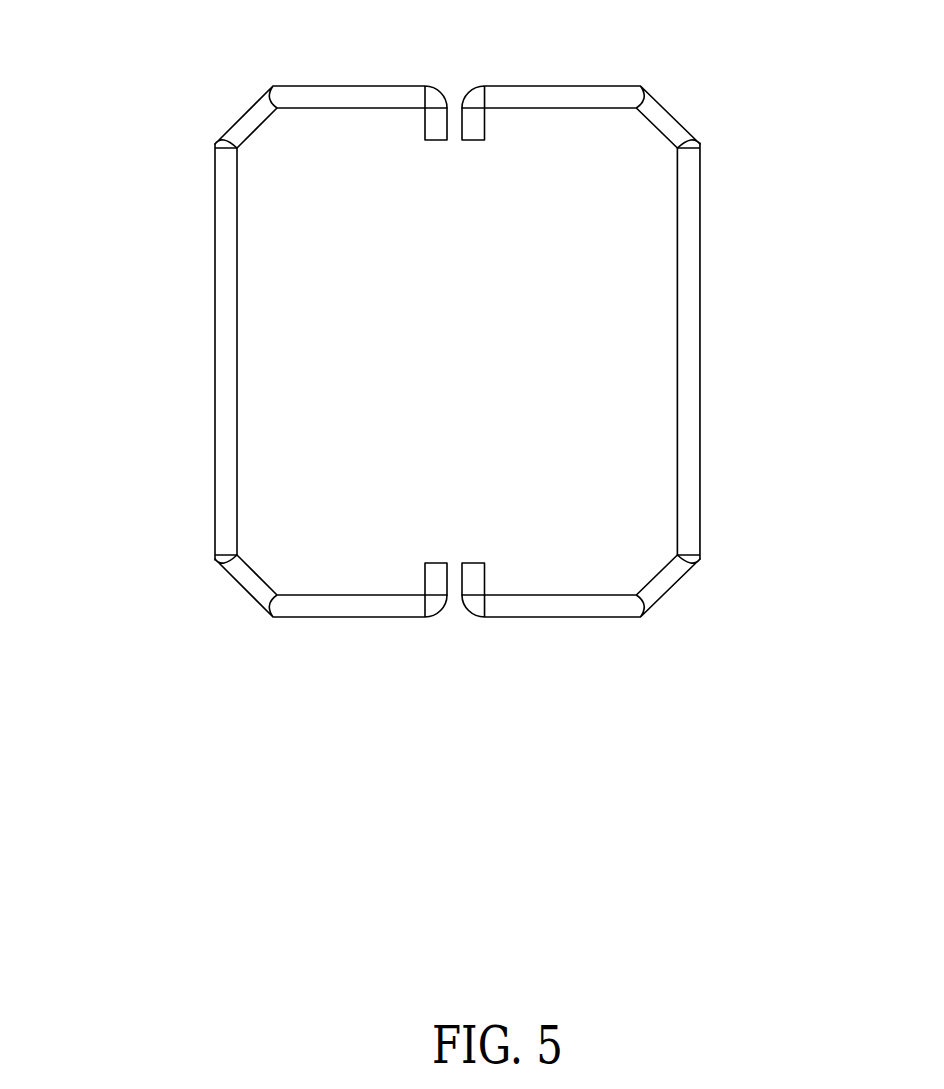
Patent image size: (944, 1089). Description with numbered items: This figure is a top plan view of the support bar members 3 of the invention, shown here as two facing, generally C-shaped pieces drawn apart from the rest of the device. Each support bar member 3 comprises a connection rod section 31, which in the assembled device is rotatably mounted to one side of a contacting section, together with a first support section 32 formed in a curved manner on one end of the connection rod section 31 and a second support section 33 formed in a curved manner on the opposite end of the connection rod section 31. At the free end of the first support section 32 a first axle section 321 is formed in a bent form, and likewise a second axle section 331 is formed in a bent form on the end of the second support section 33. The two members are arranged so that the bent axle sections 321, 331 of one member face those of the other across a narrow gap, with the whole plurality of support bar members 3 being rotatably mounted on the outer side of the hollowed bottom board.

The support bar member 3 is at (113, 42).
The connection rod section 31 is at (213, 358).
The first support section 32 is at (297, 86).
The first axle section 321 is at (433, 140).
The second support section 33 is at (238, 588).
The second axle section 331 is at (470, 140).